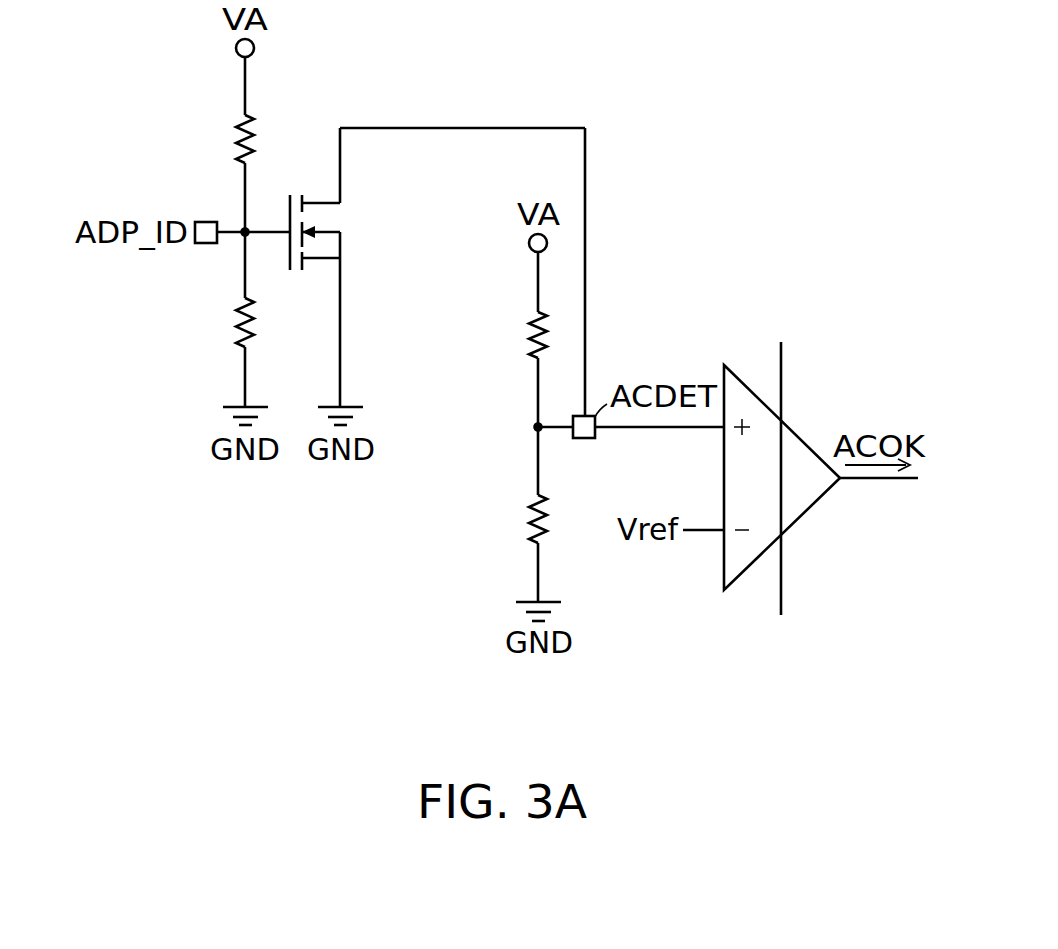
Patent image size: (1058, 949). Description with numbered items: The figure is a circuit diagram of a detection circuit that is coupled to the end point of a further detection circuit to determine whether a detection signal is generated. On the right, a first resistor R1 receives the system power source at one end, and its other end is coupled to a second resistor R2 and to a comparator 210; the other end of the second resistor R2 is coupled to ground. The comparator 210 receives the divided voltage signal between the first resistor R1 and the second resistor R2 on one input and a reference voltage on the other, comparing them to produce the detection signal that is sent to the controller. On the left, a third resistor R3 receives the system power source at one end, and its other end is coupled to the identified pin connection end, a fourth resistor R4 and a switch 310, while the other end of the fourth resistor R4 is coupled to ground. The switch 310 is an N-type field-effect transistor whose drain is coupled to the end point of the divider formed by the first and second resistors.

The switch 310 is at (348, 251).
The comparator 210 is at (800, 437).
The first resistor R1 is at (528, 336).
The second resistor R2 is at (528, 519).
The third resistor R3 is at (235, 142).
The fourth resistor R4 is at (235, 326).